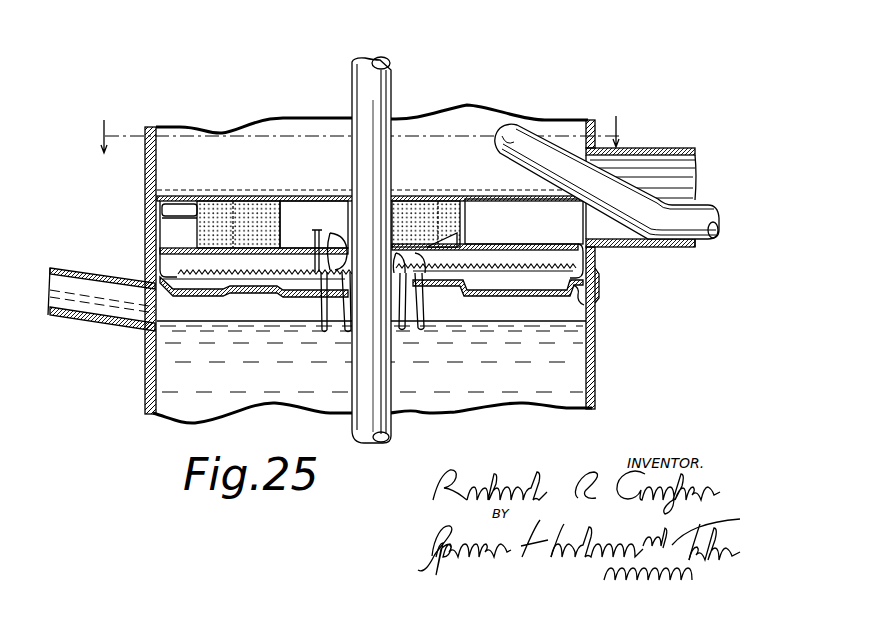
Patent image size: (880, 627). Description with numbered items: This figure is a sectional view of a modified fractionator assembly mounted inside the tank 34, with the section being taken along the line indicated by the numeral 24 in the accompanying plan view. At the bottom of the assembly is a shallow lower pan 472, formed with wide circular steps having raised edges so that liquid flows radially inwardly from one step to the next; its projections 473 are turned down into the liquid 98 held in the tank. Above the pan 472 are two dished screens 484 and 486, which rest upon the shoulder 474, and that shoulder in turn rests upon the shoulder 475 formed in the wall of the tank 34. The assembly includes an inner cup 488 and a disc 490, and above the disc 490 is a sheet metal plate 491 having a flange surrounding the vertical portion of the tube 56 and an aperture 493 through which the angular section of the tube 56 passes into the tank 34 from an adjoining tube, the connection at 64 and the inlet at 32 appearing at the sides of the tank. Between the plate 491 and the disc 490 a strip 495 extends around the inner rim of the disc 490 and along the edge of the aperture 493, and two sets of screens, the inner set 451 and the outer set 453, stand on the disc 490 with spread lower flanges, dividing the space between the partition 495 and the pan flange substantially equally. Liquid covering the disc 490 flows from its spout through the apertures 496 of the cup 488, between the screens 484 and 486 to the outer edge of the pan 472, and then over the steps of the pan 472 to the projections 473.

The section line 24- 24 is at (355, 124).
The inlet tube 32 is at (117, 318).
The tank 34 is at (268, 134).
The tube 56 is at (373, 99).
The outlet tube 64 is at (677, 156).
The liquid 98 is at (546, 306).
The inner set of screens 451 is at (233, 222).
The outer set of screens 453 is at (197, 230).
The lower pan 472 is at (194, 295).
The projections 473 is at (423, 309).
The shoulder 474 is at (575, 289).
The shoulder 475 is at (594, 283).
The dished screen 484 is at (174, 272).
The dished screen 486 is at (225, 266).
The inner cup 488 is at (326, 242).
The disc 490 is at (543, 248).
The sheet metal plate 491 is at (262, 176).
The aperture 493 is at (487, 192).
The strip 495 is at (431, 223).
The apertures 496 is at (347, 252).